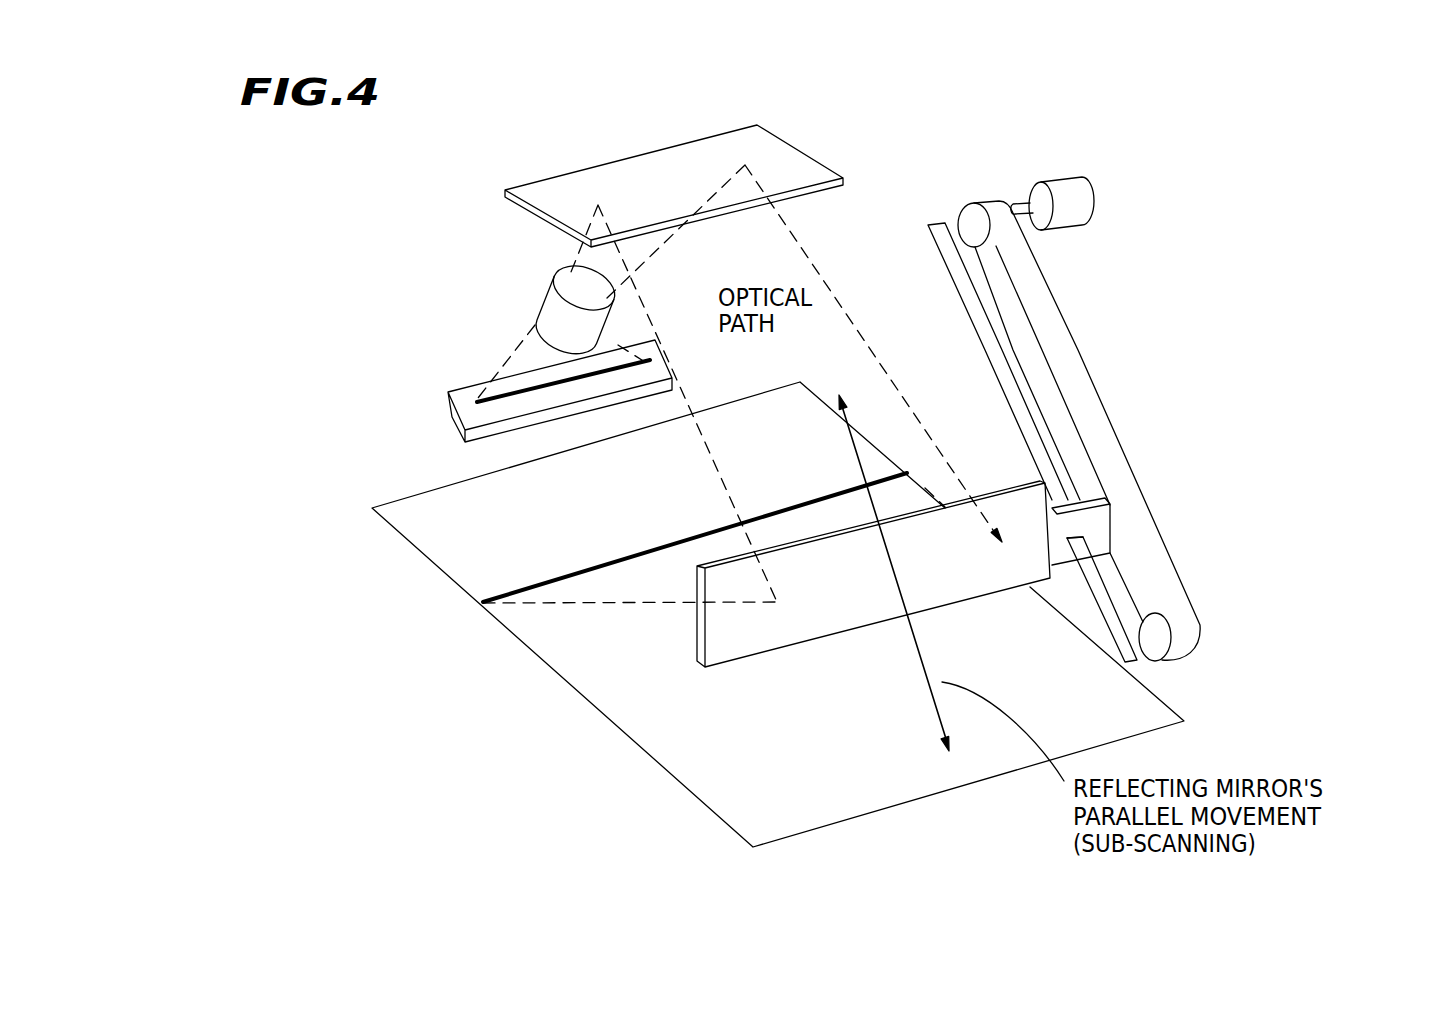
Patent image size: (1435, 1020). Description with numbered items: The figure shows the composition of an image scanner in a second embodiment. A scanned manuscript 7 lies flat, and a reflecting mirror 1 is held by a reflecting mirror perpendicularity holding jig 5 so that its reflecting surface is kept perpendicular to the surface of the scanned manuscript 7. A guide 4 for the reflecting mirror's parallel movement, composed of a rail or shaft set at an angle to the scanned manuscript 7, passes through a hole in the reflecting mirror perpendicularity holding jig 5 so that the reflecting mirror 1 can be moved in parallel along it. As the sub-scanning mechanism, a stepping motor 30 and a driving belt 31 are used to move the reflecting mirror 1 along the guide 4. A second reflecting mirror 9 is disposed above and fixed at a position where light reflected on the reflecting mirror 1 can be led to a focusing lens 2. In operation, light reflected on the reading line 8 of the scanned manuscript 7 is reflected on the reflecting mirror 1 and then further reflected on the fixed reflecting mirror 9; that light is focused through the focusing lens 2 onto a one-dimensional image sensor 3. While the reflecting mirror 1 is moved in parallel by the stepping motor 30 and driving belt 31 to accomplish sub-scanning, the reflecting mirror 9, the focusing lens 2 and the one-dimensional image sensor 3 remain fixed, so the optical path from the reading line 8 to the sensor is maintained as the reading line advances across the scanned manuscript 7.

The reflecting mirror 1 is at (710, 635).
The focusing lens 2 is at (547, 300).
The one-dimensional image sensor 3 is at (448, 403).
The reflecting mirror parallel movement guide 4 is at (933, 217).
The reflecting mirror perpendicularity holding jig 5 is at (1102, 529).
The scanned manuscript 7 is at (735, 800).
The reading line 8 is at (573, 573).
The second reflecting mirror 9 is at (612, 173).
The stepping motor 30 is at (1083, 202).
The driving belt 31 is at (1083, 383).